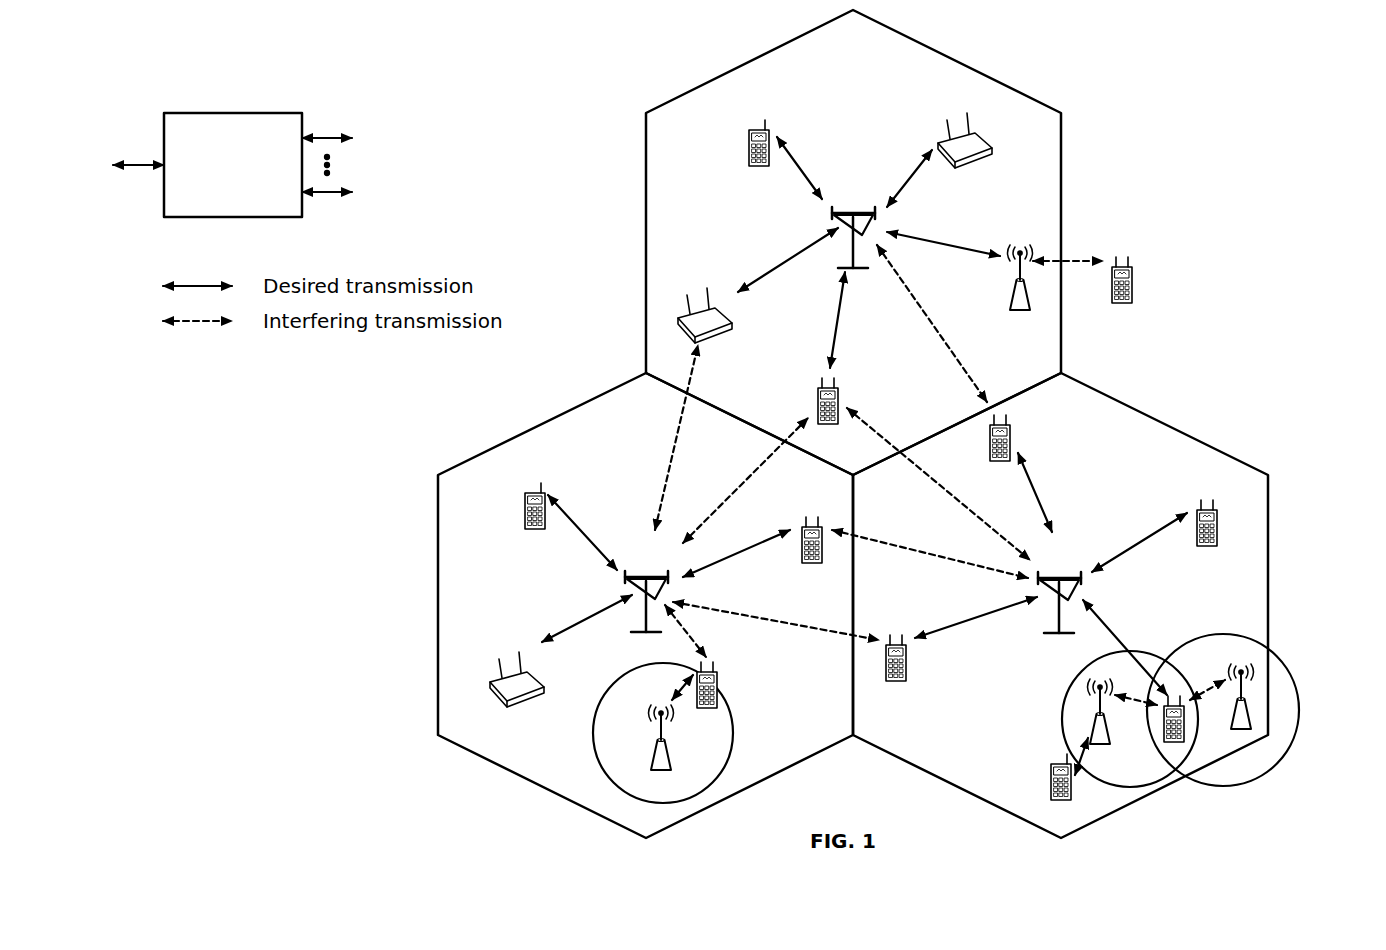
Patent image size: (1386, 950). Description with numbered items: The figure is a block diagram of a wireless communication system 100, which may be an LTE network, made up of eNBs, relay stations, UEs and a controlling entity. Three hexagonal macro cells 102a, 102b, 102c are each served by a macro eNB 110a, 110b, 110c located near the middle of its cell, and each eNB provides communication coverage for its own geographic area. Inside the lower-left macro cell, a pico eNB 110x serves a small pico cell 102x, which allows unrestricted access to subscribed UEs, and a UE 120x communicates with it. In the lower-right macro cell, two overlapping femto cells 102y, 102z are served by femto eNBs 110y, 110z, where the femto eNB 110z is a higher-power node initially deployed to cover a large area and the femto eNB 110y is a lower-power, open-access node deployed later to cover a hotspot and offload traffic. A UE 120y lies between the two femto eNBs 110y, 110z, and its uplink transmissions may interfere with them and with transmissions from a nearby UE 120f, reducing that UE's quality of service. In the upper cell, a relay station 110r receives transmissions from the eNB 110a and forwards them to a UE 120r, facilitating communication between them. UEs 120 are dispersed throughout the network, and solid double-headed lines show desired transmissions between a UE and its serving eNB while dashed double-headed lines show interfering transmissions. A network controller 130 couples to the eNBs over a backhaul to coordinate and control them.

The wireless communication system 100 is at (1201, 78).
The macro cell 102a is at (959, 61).
The macro cell 102b is at (546, 421).
The macro cell 102c is at (1161, 422).
The pico cell 102x is at (613, 683).
The femto cell 102y is at (1073, 681).
The femto cell 102z is at (1223, 634).
The macro eNB 110a is at (850, 212).
The macro eNB 110b is at (642, 576).
The macro eNB 110c is at (1056, 577).
The relay station 110r is at (1011, 300).
The pico eNB 110x is at (671, 763).
The femto eNB 110y is at (1107, 741).
The femto eNB 110z is at (1248, 729).
The UE 120 is at (749, 138).
The UE 120r is at (1131, 300).
The UE 120x is at (718, 679).
The UE 120y is at (1166, 745).
The UE 120f is at (1050, 790).
The network controller 130 is at (228, 113).